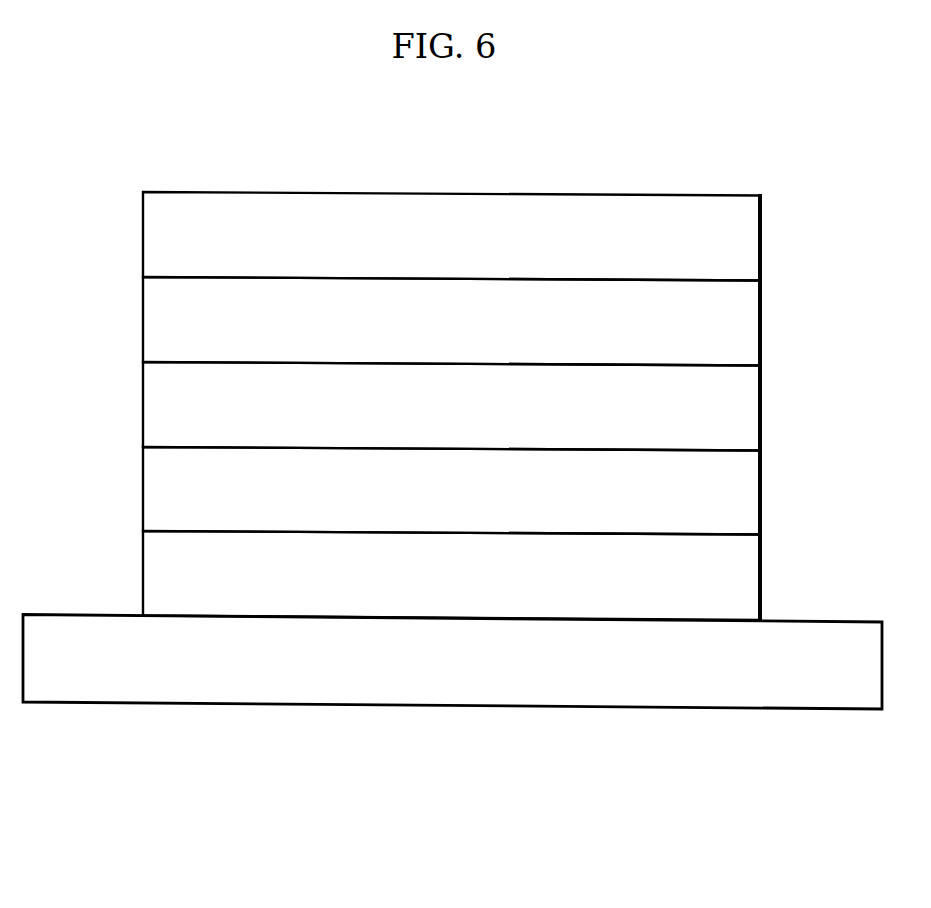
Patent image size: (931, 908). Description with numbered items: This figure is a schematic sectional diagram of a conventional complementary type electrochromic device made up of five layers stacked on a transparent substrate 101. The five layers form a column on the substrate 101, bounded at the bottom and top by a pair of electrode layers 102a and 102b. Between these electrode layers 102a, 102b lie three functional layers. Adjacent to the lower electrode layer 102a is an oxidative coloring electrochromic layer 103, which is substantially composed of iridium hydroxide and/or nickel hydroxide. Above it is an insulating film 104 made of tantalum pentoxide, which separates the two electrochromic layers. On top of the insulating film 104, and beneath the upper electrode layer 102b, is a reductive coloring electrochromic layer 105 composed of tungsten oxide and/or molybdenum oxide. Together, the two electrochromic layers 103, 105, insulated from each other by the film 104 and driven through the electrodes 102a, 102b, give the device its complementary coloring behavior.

The transparent substrate 101 is at (348, 678).
The electrode layer 102a is at (178, 573).
The electrode layer 102b is at (178, 238).
The oxidative coloring electrochromic layer 103 is at (178, 489).
The insulating film 104 is at (178, 410).
The reductive coloring electrochromic layer 105 is at (178, 325).